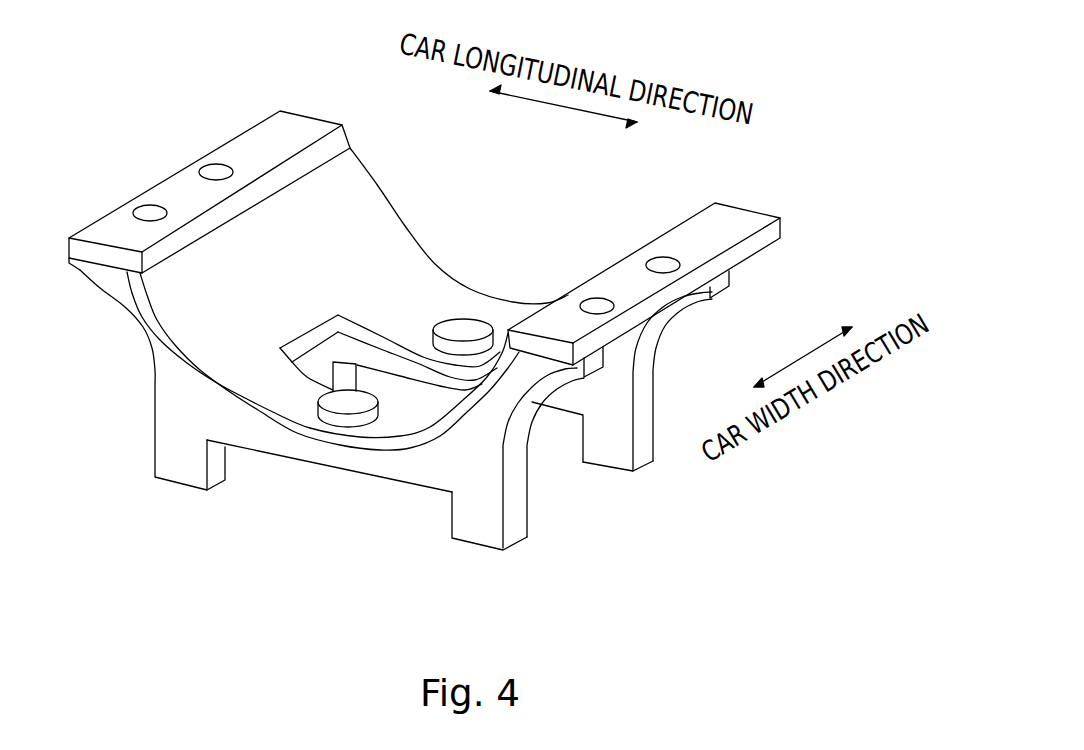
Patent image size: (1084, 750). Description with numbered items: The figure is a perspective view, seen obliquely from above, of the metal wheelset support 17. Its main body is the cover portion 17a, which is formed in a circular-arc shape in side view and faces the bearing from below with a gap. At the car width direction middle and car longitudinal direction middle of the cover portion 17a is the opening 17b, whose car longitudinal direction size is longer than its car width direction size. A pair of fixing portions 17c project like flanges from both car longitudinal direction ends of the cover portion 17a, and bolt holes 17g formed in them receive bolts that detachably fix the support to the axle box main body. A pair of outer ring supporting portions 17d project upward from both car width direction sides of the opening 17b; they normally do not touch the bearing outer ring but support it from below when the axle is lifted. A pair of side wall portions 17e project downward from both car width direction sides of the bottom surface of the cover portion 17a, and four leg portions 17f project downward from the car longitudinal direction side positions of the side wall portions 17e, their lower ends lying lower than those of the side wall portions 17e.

The wheelset support 17 is at (313, 106).
The cover portion 17a is at (392, 240).
The opening 17b is at (414, 388).
The fixing portions 17c is at (152, 190).
The outer ring supporting portions 17d is at (464, 325).
The side wall portions 17e is at (265, 453).
The leg portions 17f is at (178, 490).
The bolt holes 17g is at (216, 170).